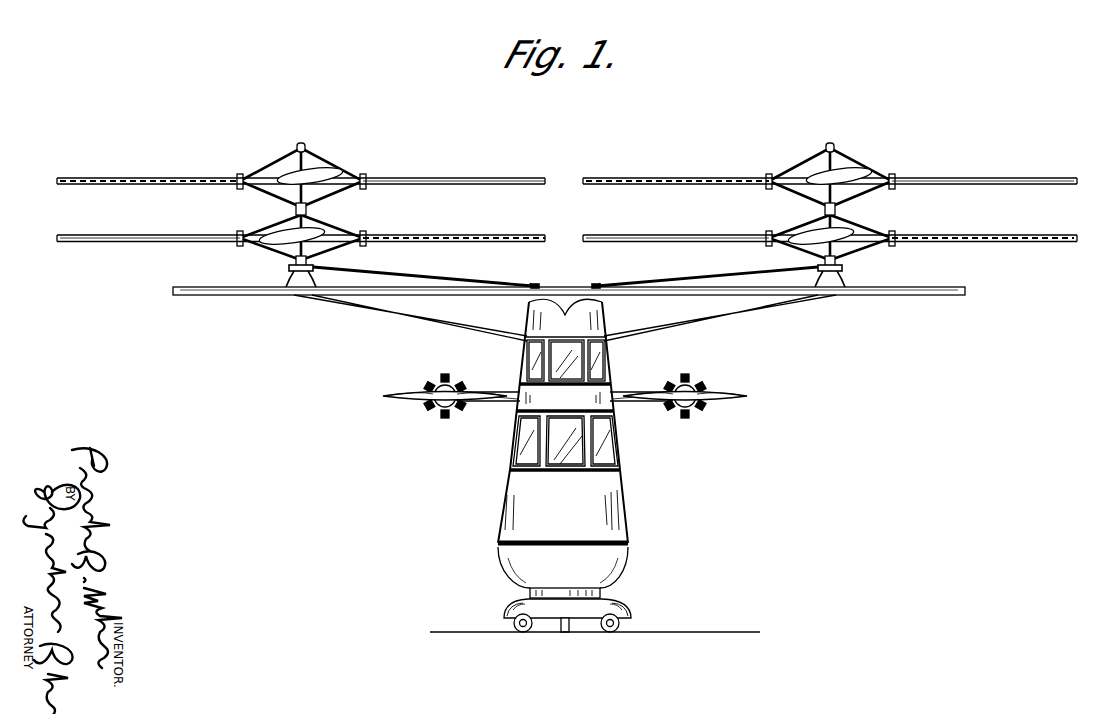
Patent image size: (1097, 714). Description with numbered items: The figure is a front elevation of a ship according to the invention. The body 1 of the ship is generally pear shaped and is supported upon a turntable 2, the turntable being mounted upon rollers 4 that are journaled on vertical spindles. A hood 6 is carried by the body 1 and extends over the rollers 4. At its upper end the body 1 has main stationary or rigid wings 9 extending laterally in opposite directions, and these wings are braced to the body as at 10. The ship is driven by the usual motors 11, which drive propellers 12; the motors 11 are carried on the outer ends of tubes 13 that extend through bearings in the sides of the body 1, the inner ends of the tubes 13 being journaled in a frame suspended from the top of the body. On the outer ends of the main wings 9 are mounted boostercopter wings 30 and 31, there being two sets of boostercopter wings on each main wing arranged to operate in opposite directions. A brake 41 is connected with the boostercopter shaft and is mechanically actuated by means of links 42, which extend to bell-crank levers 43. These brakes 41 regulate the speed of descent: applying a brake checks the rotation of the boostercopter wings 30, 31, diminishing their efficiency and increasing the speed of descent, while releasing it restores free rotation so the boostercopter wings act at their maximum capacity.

The body 1 is at (621, 512).
The turntable 2 is at (616, 612).
The rollers 4 is at (565, 633).
The hood 6 is at (516, 612).
The main stationary wings 9 is at (372, 296).
The bracing 10 is at (415, 322).
The motors 11 is at (442, 418).
The propellers 12 is at (408, 400).
The tubes 13 is at (508, 404).
The boostercopter wings 30 is at (68, 186).
The boostercopter wings 31 is at (153, 244).
The brake 41 is at (288, 268).
The links 42 is at (505, 280).
The bell-crank levers 43 is at (596, 284).